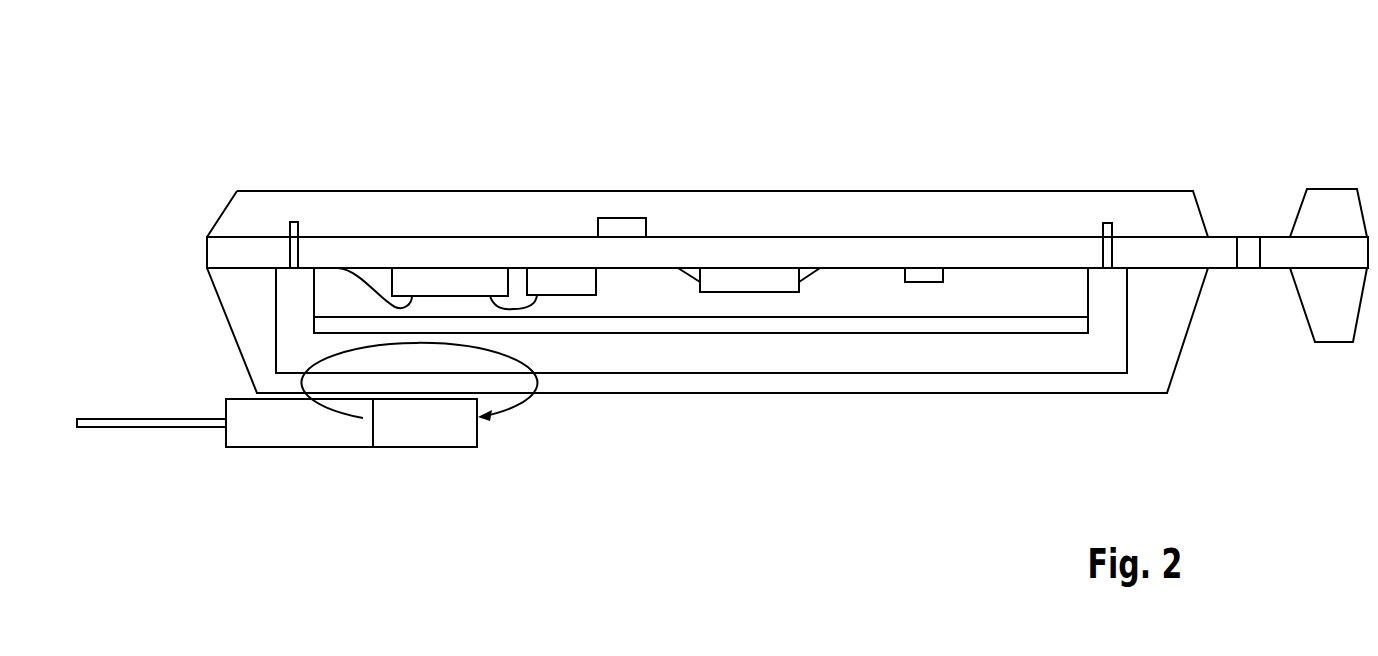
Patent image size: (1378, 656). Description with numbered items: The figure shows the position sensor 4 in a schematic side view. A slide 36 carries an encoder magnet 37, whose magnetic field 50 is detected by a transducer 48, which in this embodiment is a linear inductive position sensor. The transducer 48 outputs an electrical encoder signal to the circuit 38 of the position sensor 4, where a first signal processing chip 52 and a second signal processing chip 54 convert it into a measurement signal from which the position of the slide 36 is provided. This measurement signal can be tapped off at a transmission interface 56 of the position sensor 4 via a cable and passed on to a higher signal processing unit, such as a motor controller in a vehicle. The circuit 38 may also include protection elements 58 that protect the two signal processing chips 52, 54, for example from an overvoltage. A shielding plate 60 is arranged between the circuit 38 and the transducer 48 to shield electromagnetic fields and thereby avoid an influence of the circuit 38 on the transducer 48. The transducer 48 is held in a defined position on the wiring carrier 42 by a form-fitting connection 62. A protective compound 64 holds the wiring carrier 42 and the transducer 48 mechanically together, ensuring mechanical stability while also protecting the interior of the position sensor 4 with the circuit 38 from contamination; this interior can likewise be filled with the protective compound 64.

The position sensor 4 is at (261, 100).
The slide 36 is at (289, 428).
The encoder magnet 37 is at (422, 428).
The circuit 38 is at (667, 296).
The wiring carrier 42 is at (493, 252).
The transducer 48 is at (857, 355).
The magnetic field 50 is at (520, 407).
The first signal processing chip 52 is at (435, 280).
The second signal processing chip 54 is at (558, 280).
The transmission interface 56 is at (1248, 250).
The protection elements 58 is at (622, 230).
The shielding plate 60 is at (913, 325).
The form-fitting connection 62 is at (302, 229).
The protective compound 64 is at (1147, 202).